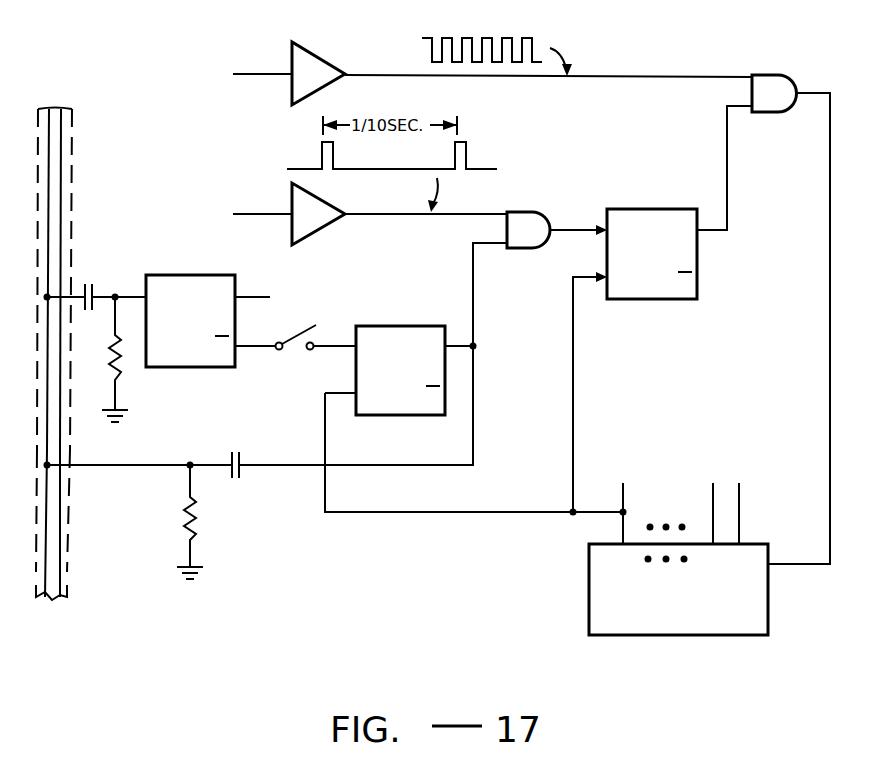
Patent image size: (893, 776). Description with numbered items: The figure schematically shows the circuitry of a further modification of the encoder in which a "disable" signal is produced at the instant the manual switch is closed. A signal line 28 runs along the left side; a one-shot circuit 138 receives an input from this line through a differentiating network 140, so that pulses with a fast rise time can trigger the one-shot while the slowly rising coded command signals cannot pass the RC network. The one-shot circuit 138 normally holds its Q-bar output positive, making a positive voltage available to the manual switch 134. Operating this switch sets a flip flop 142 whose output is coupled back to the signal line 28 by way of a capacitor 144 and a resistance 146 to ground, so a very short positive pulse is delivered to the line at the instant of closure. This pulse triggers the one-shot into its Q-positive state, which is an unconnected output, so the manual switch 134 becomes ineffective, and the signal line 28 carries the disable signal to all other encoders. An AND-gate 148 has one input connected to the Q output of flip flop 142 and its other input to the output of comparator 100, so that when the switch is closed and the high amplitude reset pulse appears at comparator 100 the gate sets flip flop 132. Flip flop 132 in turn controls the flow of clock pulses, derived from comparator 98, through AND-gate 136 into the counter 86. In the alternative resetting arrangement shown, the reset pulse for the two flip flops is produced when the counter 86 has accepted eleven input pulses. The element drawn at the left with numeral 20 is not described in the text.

The ticket strip 20 is at (76, 178).
The signal line 28 is at (45, 528).
The counter 86 is at (603, 572).
The comparator 98 is at (313, 68).
The comparator 100 is at (303, 228).
The flip flop 132 is at (660, 218).
The manual switch 134 is at (293, 322).
The AND-gate 136 is at (770, 90).
The one-shot circuit 138 is at (208, 287).
The differentiating network 140 is at (135, 243).
The flip flop 142 is at (415, 337).
The capacitor 144 is at (243, 462).
The resistance 146 is at (199, 530).
The AND-gate 148 is at (525, 222).